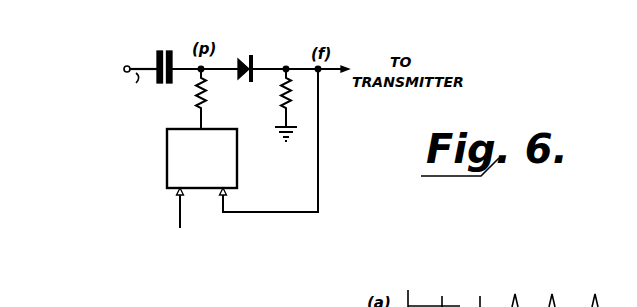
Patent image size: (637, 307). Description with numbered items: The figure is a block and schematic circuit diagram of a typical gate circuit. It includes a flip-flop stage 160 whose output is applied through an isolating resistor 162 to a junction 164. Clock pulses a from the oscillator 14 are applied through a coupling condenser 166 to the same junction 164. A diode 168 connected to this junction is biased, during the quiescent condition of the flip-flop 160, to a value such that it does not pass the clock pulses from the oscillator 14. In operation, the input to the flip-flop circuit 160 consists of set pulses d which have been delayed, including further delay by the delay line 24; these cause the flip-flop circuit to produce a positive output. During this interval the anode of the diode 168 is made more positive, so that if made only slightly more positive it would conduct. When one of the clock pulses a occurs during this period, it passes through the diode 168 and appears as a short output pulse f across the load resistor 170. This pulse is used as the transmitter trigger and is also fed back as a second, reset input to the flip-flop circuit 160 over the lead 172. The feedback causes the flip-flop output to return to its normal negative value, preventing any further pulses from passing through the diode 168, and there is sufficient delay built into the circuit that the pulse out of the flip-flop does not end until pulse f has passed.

The oscillator 14 is at (96, 78).
The delay line 24 is at (171, 239).
The flip-flop stage 160 is at (167, 152).
The isolating resistor 162 is at (195, 98).
The junction 164 is at (203, 68).
The coupling condenser 166 is at (163, 50).
The diode 168 is at (254, 59).
The load resistor 170 is at (281, 96).
The lead 172 is at (318, 162).